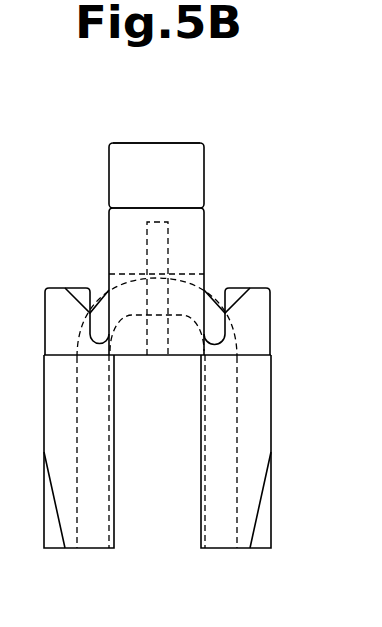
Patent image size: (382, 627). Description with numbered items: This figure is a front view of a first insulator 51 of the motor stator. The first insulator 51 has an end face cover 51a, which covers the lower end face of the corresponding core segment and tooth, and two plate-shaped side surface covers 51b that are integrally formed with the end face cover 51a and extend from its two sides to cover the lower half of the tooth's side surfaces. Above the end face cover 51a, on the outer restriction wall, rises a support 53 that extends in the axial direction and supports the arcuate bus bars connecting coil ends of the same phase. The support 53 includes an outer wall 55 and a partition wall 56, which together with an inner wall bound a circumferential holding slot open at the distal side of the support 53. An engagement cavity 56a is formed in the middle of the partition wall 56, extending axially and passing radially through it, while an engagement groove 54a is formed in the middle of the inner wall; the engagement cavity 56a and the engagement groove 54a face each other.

The first insulator 51 is at (237, 129).
The end face cover 51a is at (108, 297).
The side surface covers 51b is at (237, 389).
The support 53 is at (190, 142).
The engagement groove 54a is at (162, 238).
The outer wall 55 is at (118, 222).
The partition wall 56 is at (118, 148).
The engagement cavity 56a is at (160, 264).